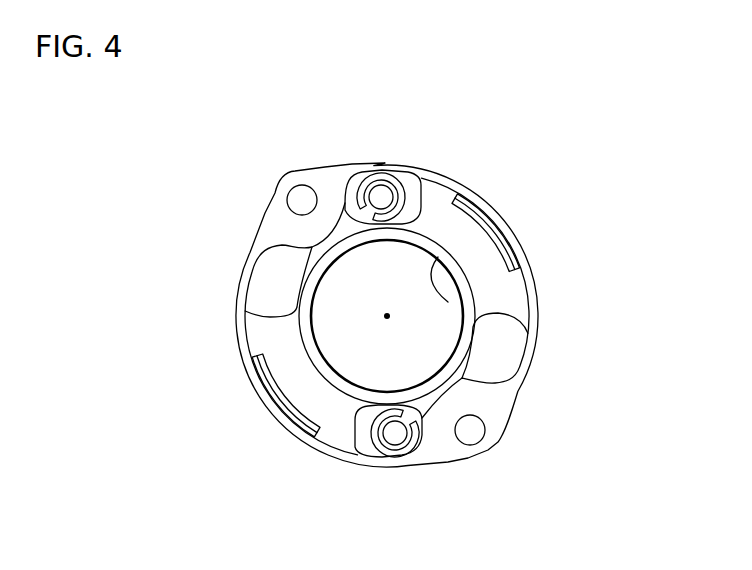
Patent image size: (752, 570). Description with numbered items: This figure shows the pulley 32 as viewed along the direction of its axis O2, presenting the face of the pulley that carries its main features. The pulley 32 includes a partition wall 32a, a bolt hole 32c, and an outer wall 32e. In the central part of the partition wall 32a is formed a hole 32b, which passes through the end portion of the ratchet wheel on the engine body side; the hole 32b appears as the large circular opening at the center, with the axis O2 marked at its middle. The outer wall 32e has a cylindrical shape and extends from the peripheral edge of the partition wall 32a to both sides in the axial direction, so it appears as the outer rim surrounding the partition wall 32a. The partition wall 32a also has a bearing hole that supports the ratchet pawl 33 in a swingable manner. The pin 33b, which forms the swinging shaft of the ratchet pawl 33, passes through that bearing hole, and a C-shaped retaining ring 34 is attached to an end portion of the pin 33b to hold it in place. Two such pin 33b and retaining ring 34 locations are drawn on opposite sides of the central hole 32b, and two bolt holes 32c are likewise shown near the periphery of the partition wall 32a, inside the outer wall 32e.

The pulley 32 is at (510, 184).
The partition wall 32a is at (507, 300).
The hole 32b is at (455, 298).
The bolt hole 32c is at (302, 196).
The outer wall 32e is at (540, 320).
The ratchet pawl 33 is at (416, 315).
The pin 33b is at (382, 196).
The C-shaped retaining ring 34 is at (404, 194).
The axis O2 is at (387, 316).